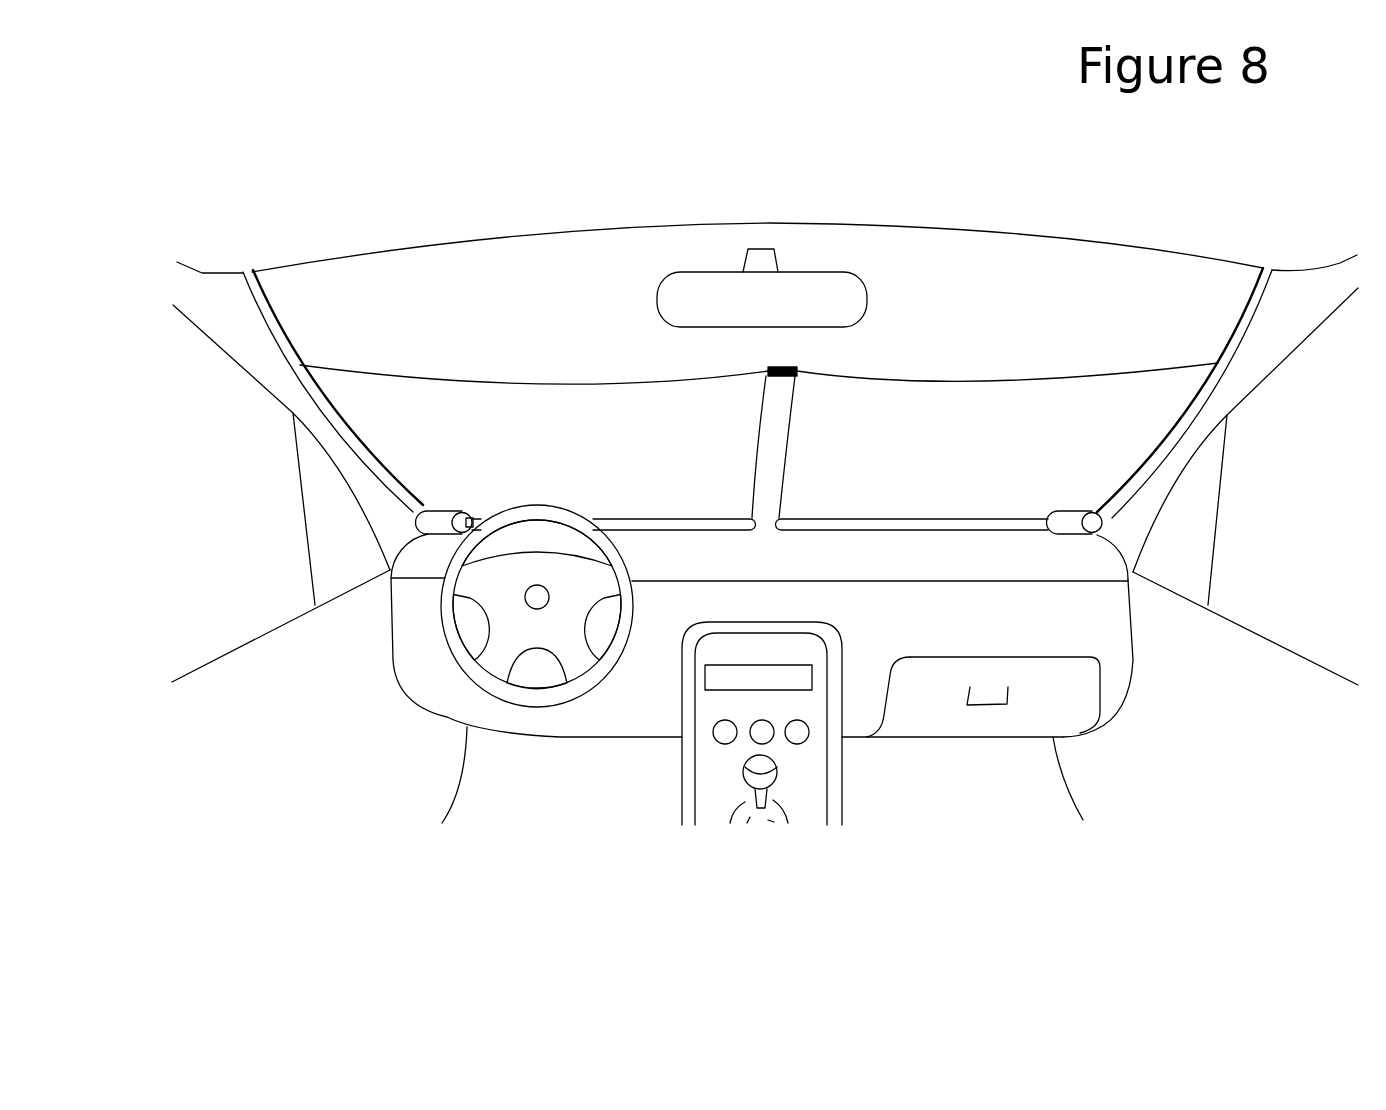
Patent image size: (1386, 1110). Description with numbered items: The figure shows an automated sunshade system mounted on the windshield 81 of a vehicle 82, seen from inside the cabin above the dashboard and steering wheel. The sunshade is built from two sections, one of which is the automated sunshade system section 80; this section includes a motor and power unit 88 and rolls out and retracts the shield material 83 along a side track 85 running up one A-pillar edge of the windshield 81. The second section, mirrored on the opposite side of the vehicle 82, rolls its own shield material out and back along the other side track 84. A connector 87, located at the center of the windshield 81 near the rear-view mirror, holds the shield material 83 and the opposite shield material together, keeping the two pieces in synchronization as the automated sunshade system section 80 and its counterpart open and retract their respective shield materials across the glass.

The automated sunshade system section 80 is at (683, 523).
The windshield 81 is at (880, 313).
The vehicle 82 is at (1247, 468).
The shield material 83 is at (518, 382).
The side track 84 is at (1238, 332).
The side track 85 is at (294, 343).
The connector 87 is at (784, 367).
The motor and power unit 88 is at (445, 535).